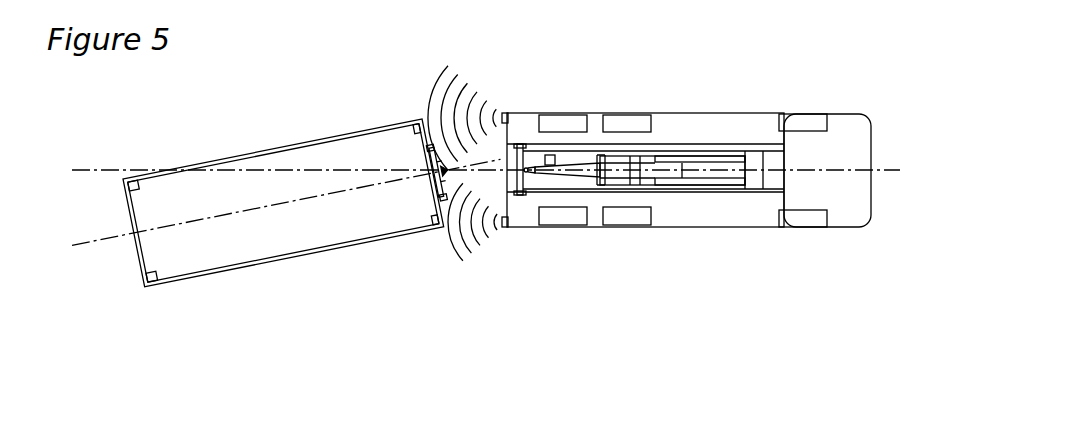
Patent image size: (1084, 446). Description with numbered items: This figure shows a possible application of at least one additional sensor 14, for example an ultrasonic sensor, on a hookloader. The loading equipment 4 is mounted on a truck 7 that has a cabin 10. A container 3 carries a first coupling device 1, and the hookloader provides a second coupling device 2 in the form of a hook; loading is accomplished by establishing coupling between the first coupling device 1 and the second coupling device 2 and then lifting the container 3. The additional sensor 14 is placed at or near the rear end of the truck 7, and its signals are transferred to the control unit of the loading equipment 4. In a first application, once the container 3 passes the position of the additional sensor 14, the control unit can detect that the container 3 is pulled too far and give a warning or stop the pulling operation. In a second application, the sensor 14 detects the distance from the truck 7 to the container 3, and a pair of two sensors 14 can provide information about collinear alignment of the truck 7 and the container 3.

The first coupling device 1 is at (441, 178).
The second coupling device 2 is at (527, 175).
The container 3 is at (270, 192).
The loading equipment 4 is at (698, 192).
The truck 7 is at (688, 132).
The cabin 10 is at (835, 183).
The additional sensor 14 is at (507, 115).